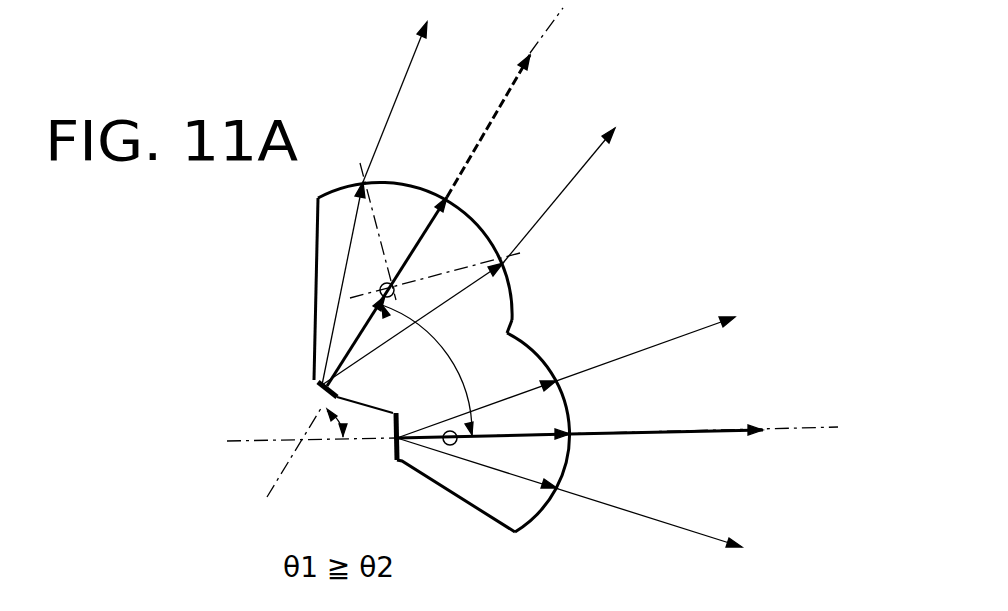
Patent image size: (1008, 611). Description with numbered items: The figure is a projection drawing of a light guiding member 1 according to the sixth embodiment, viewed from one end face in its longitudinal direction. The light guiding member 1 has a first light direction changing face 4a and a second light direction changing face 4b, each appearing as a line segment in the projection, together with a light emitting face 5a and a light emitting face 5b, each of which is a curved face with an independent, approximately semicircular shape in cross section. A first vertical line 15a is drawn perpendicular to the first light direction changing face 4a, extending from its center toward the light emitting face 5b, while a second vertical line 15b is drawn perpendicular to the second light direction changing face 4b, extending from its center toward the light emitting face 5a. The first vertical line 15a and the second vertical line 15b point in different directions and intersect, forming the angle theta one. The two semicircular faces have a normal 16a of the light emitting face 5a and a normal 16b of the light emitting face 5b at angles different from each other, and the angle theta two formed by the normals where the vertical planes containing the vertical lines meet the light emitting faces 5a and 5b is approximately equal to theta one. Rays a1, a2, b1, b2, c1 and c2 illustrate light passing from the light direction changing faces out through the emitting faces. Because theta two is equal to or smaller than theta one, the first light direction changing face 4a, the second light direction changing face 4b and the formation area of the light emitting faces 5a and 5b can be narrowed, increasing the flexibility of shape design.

The light guiding member 1 is at (570, 550).
The first light direction changing face 4a is at (402, 465).
The second light direction changing face 4b is at (318, 383).
The light emitting face 5a is at (480, 219).
The light emitting face 5b is at (567, 410).
The first vertical line 15a is at (810, 447).
The second vertical line 15b is at (566, 40).
The normal of the light emitting face 5a 16a is at (295, 429).
The normal of the light emitting face 5b 16b is at (316, 452).
The light ray a (incident) a1 is at (417, 238).
The light ray a (emitted) a2 is at (503, 98).
The light ray b (incident) b1 is at (348, 248).
The light ray b (emitted) b2 is at (410, 60).
The light ray c (incident) c1 is at (457, 287).
The light ray c (emitted) c2 is at (595, 148).